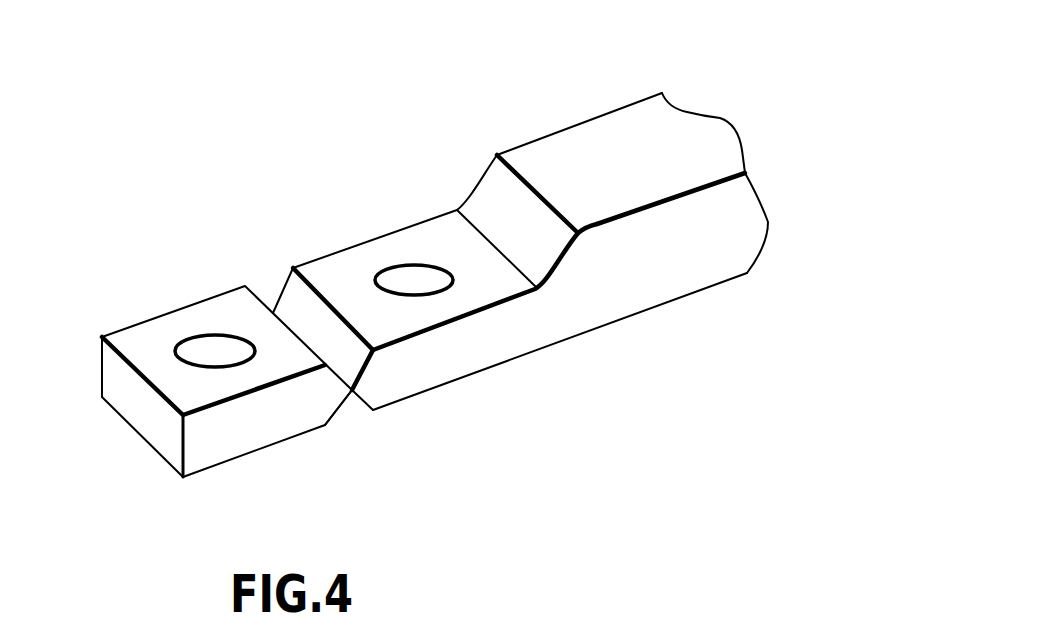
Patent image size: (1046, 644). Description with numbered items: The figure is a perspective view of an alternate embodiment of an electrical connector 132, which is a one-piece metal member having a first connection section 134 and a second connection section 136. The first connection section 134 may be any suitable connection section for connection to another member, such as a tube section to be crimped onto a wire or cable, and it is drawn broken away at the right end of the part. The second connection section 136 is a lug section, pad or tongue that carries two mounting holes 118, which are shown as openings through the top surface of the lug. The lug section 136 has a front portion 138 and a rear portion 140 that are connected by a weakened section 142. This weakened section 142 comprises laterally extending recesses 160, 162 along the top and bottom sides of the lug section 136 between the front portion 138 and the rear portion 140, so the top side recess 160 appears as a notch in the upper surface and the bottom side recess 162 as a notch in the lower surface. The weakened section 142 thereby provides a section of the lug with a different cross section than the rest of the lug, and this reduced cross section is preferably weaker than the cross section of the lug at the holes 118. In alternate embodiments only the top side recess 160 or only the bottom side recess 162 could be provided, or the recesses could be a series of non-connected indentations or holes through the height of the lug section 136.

The connector 132 is at (194, 140).
The first connection section 134 is at (593, 137).
The second connection section 136 is at (130, 430).
The front portion 138 is at (102, 337).
The mounting holes 118 is at (195, 353).
The top side recess 160 is at (283, 302).
The bottom side recess 162 is at (353, 395).
The weakened section 142 is at (352, 395).
The rear portion 140 is at (488, 340).